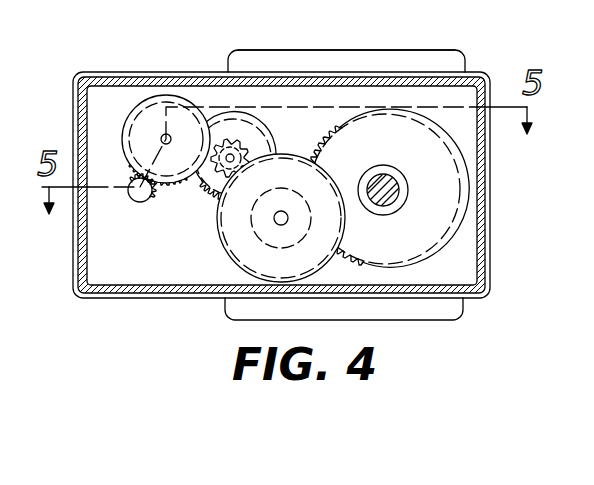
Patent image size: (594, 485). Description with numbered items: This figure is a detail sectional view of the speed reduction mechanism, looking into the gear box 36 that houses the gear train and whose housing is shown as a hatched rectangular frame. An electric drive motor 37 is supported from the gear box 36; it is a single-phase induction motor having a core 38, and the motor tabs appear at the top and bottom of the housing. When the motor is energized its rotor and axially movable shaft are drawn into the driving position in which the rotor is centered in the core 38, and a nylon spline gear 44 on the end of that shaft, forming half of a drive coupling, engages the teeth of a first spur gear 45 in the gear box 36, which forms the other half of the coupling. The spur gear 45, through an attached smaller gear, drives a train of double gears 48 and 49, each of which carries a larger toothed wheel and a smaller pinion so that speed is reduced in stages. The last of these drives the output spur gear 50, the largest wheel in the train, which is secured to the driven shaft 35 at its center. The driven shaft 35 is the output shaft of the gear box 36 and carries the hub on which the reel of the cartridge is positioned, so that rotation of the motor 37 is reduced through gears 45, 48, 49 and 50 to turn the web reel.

The driven shaft 35 is at (384, 180).
The gear box 36 is at (482, 268).
The electric drive motor 37 is at (432, 32).
The core 38 is at (352, 56).
The nylon spline gear 44 is at (140, 205).
The first spur gear 45 is at (150, 103).
The double gear 48 is at (258, 133).
The double gear 49 is at (233, 257).
The output spur gear 50 is at (457, 203).